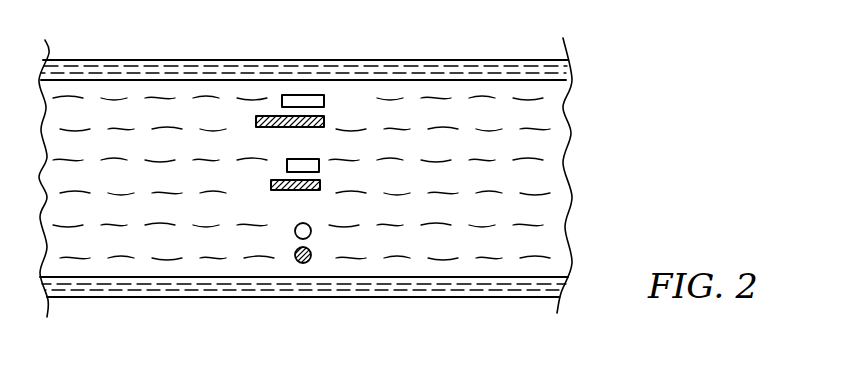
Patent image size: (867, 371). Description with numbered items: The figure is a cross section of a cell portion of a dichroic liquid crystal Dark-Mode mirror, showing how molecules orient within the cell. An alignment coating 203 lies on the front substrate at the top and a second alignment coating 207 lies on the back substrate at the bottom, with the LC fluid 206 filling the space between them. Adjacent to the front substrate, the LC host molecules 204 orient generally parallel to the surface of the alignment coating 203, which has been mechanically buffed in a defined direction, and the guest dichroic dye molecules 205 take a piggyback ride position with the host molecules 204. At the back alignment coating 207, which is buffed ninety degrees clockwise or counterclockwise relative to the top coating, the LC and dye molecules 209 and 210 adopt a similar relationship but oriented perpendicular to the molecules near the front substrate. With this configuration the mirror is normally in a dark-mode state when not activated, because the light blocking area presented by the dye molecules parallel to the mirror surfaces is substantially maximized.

The alignment coating 203 is at (443, 72).
The LC host molecules 204 is at (307, 95).
The guest dye molecules 205 is at (267, 116).
The LC fluid 206 is at (538, 153).
The alignment coating 207 is at (453, 288).
The LC molecule 209 is at (310, 228).
The dye molecule 210 is at (296, 262).